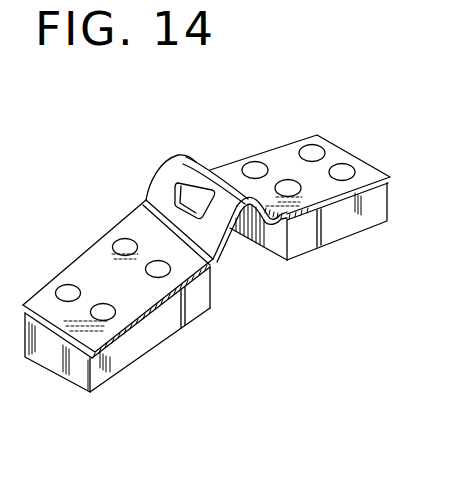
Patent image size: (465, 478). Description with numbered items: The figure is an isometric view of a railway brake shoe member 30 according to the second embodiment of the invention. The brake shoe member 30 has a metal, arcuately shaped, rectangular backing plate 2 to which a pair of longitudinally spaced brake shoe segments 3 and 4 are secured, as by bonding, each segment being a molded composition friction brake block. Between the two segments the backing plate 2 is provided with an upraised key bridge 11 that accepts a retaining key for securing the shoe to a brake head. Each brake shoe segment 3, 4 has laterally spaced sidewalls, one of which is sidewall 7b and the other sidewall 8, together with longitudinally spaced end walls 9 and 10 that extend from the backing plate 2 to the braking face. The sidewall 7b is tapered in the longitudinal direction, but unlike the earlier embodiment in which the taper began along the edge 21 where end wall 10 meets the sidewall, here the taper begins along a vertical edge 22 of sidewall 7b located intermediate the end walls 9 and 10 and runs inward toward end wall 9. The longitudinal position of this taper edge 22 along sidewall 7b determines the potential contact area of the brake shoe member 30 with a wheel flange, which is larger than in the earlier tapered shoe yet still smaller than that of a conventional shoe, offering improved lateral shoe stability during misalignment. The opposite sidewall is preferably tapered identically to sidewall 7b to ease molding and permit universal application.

The backing plate 2 is at (92, 258).
The brake shoe segment 3 is at (102, 380).
The brake shoe segment 4 is at (374, 199).
The sidewall 7b is at (140, 348).
The sidewall 8 is at (459, 291).
The end wall 9 is at (68, 373).
The end wall 10 is at (270, 243).
The key bridge 11 is at (198, 158).
The edge 21 is at (211, 309).
The vertical edge 22 is at (181, 320).
The brake shoe member 30 is at (286, 130).